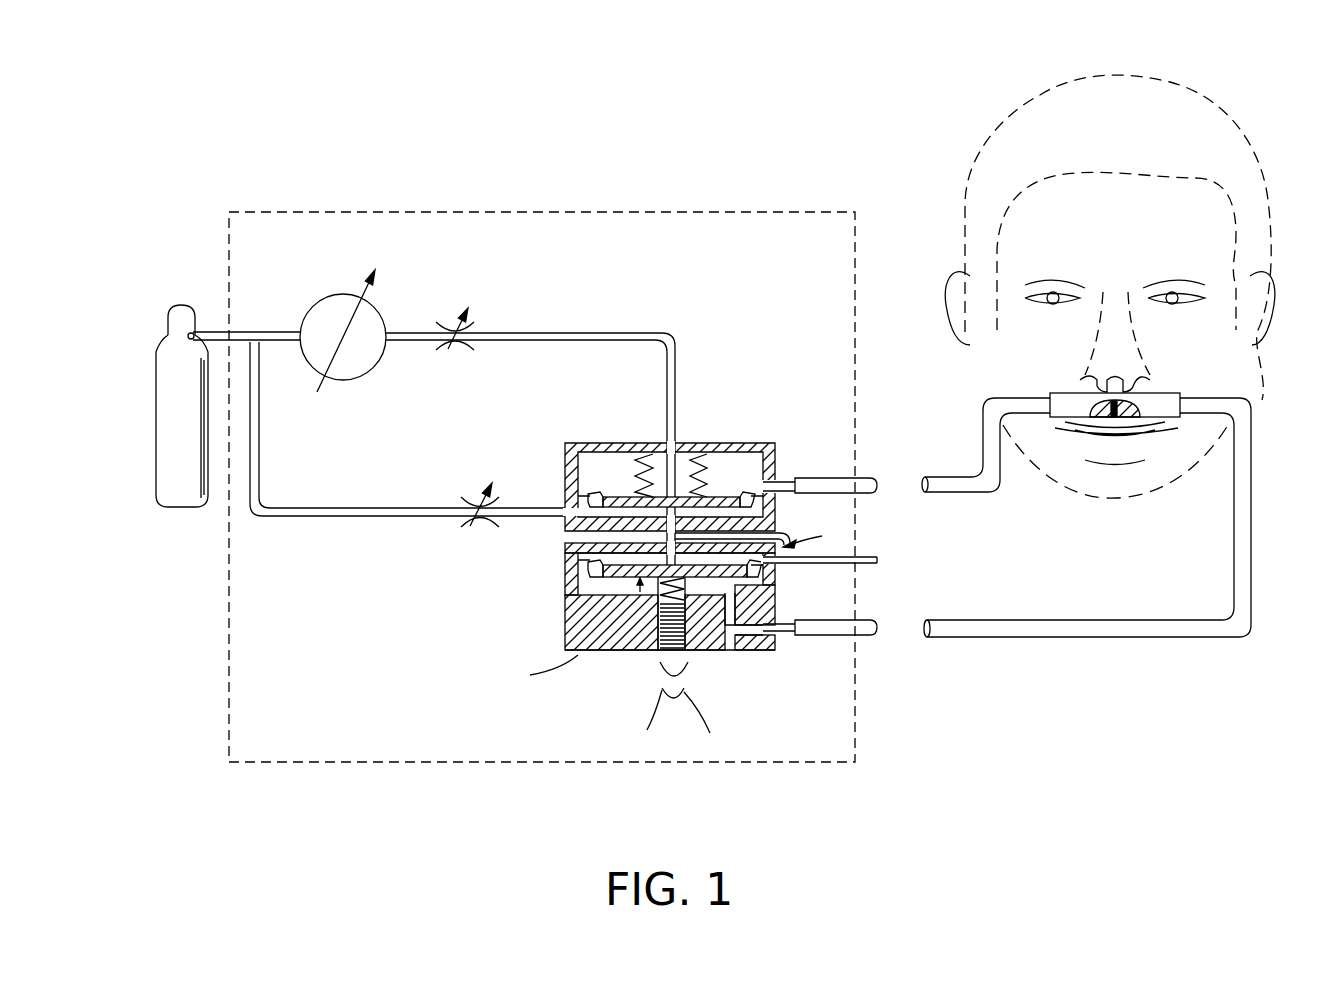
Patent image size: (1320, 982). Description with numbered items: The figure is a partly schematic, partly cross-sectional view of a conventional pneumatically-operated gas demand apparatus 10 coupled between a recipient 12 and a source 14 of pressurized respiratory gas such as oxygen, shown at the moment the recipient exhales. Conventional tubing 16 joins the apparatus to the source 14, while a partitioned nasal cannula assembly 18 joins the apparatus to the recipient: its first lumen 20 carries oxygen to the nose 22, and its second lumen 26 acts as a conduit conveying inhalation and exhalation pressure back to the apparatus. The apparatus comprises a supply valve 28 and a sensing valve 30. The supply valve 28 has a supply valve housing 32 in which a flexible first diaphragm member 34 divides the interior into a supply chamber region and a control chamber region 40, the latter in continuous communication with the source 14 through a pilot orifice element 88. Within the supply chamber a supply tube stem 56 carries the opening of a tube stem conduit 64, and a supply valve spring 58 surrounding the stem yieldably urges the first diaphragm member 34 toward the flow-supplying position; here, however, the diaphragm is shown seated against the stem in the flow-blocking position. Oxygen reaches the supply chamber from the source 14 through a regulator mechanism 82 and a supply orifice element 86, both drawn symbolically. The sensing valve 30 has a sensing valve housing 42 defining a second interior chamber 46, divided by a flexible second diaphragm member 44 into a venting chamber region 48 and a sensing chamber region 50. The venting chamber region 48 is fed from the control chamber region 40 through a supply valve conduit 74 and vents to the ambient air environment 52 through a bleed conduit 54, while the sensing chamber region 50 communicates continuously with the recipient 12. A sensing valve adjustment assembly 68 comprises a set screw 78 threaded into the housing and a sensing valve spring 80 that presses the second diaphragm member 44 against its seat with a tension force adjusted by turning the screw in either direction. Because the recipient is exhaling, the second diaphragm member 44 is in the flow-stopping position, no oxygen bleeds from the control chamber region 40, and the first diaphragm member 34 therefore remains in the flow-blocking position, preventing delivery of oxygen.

The pneumatically-operated gas demand apparatus 10 is at (795, 212).
The recipient 12 is at (965, 176).
The source of pressurized respiratory gas 14 is at (193, 440).
The tubing 16 is at (212, 334).
The nasal cannula assembly 18 is at (1050, 396).
The first lumen 20 is at (860, 478).
The nose 22 is at (1115, 366).
The second lumen 26 is at (940, 637).
The supply valve 28 is at (780, 445).
The sensing valve 30 is at (817, 529).
The supply valve housing 32 is at (596, 443).
The first diaphragm member 34 is at (770, 458).
The control chamber region 40 is at (567, 517).
The sensing valve housing 42 is at (588, 652).
The second diaphragm member 44 is at (598, 626).
The second interior chamber 46 is at (757, 570).
The venting chamber region 48 is at (598, 549).
The sensing chamber region 50 is at (590, 580).
The ambient air environment 52 is at (969, 570).
The bleed conduit 54 is at (857, 557).
The supply tube stem 56 is at (622, 476).
The supply valve spring 58 is at (746, 472).
The tube stem conduit 64 is at (605, 333).
The sensing valve adjustment assembly 68 is at (652, 661).
The supply valve conduit 74 is at (782, 537).
The set screw 78 is at (693, 654).
The sensing valve spring 80 is at (737, 632).
The regulator mechanism 82 is at (305, 320).
The supply orifice element 86 is at (477, 327).
The pilot orifice element 88 is at (468, 505).